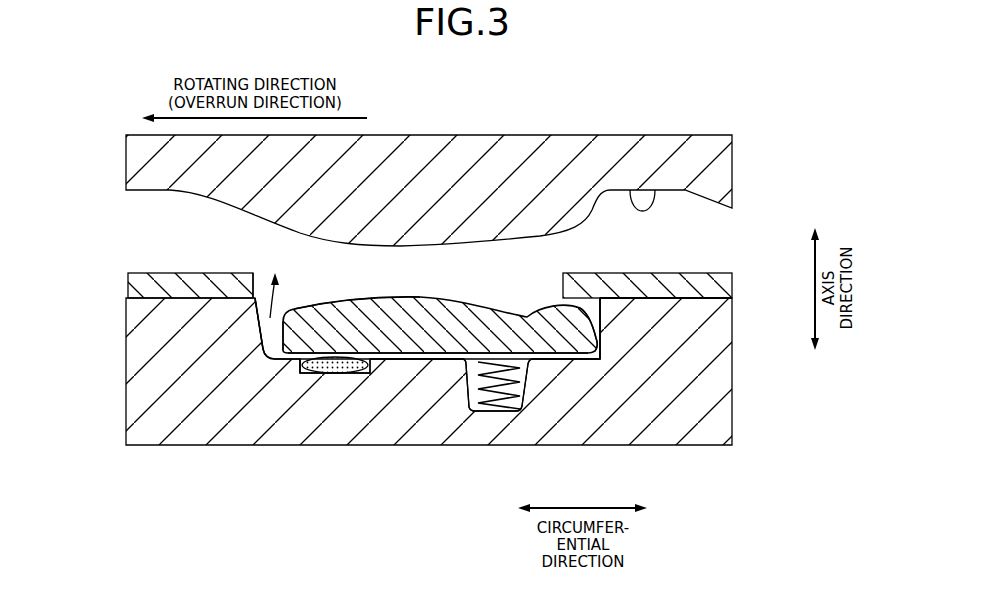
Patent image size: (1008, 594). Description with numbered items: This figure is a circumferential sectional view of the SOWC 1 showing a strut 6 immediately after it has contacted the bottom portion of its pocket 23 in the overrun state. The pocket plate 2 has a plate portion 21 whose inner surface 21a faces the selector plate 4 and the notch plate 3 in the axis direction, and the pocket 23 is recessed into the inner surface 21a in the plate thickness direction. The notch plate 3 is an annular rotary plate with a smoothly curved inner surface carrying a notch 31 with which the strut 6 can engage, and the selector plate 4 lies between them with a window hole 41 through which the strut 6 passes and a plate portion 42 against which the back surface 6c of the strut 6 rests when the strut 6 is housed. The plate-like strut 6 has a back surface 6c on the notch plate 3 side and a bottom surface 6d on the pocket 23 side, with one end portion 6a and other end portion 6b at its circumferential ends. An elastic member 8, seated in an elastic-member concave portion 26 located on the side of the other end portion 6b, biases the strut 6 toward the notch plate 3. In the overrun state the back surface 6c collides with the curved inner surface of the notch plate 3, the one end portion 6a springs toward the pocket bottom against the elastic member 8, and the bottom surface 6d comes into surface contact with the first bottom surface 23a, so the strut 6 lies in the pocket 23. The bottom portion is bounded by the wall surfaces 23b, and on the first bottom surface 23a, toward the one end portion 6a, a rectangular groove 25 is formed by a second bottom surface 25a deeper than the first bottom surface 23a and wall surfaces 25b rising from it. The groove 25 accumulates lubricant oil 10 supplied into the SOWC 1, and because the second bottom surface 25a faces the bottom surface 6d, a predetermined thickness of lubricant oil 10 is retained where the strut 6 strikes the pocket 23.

The SOWC 1 is at (524, 98).
The pocket plate 2 is at (463, 371).
The plate portion 21 is at (710, 380).
The inner surface 21a is at (653, 298).
The notch plate 3 is at (710, 185).
The notch 31 is at (630, 190).
The selector plate 4 is at (464, 285).
The plate portion 42 is at (708, 288).
The window hole 41 is at (258, 280).
The strut 6 is at (422, 288).
The one end portion 6a is at (264, 348).
The other end portion 6b is at (604, 340).
The back surface 6c is at (383, 300).
The bottom surface 6d is at (449, 356).
The elastic member 8 is at (498, 392).
The lubricant oil 10 is at (334, 382).
The pocket 23 is at (286, 362).
The first bottom surface 23a is at (408, 357).
The wall surface 23b is at (256, 308).
The groove 25 is at (331, 374).
The second bottom surface 25a is at (366, 374).
The wall surface 25b is at (310, 373).
The elastic-member concave portion 26 is at (534, 396).